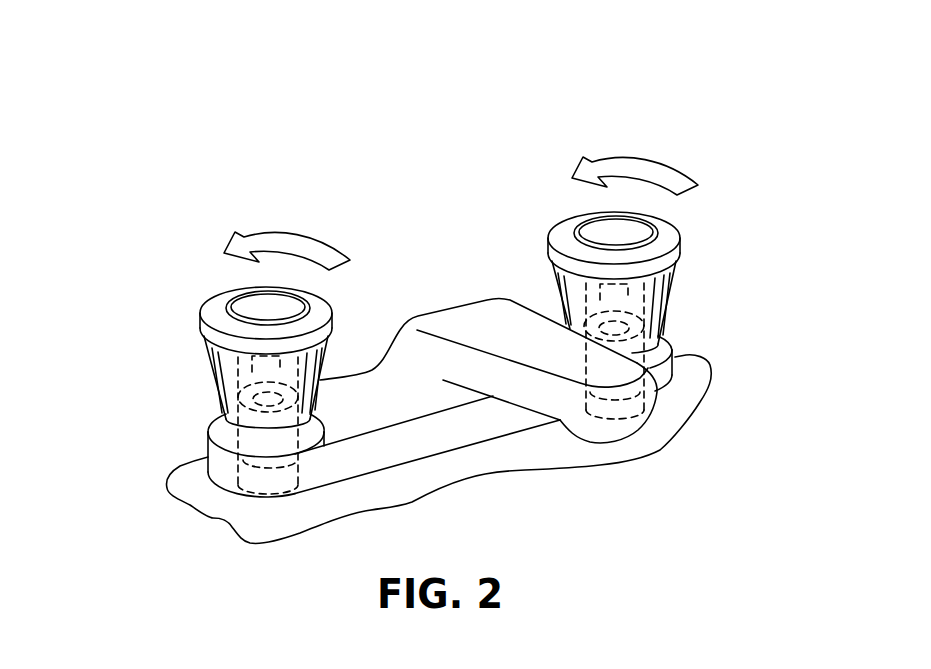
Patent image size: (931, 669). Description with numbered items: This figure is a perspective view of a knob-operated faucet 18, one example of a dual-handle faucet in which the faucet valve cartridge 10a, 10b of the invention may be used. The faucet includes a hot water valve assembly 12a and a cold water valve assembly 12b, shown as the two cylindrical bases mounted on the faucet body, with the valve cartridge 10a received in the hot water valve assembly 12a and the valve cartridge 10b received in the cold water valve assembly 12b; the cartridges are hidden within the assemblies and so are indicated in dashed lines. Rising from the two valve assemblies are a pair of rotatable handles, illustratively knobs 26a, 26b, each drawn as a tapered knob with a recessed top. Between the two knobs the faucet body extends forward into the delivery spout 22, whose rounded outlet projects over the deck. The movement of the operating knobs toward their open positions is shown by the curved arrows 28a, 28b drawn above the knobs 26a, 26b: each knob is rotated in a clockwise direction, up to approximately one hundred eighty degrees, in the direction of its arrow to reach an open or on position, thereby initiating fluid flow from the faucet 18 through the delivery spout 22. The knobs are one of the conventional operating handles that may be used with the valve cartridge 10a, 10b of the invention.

The knob-operated faucet 18 is at (451, 126).
The delivery spout 22 is at (593, 437).
The knob 26a is at (200, 313).
The knob 26b is at (676, 278).
The hot water valve assembly 12a is at (189, 433).
The cold water valve assembly 12b is at (690, 345).
The faucet valve cartridge 10a is at (240, 503).
The faucet valve cartridge 10b is at (640, 430).
The arrow 28a is at (298, 232).
The arrow 28b is at (642, 157).